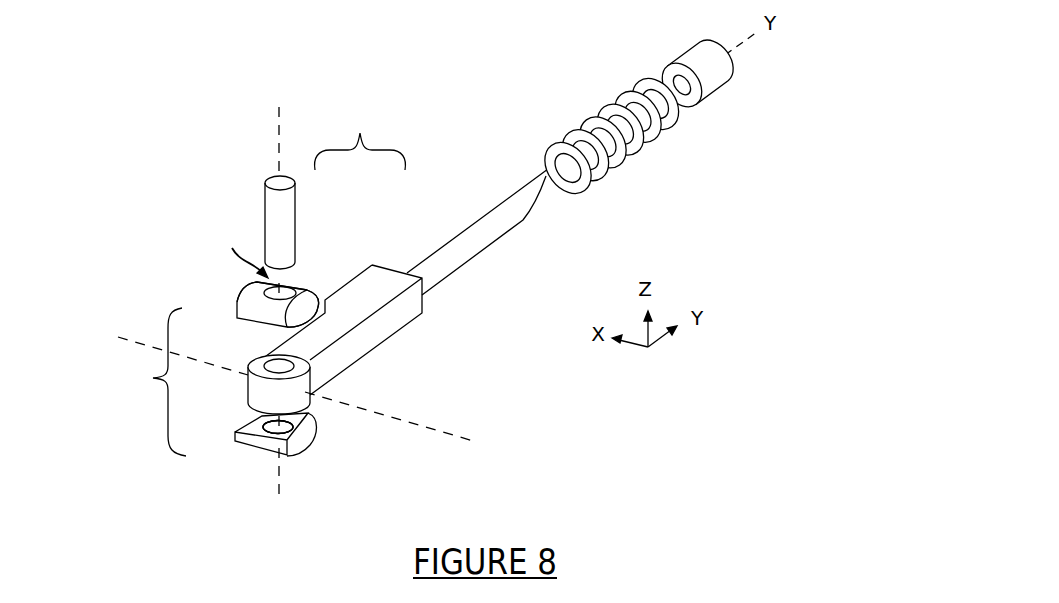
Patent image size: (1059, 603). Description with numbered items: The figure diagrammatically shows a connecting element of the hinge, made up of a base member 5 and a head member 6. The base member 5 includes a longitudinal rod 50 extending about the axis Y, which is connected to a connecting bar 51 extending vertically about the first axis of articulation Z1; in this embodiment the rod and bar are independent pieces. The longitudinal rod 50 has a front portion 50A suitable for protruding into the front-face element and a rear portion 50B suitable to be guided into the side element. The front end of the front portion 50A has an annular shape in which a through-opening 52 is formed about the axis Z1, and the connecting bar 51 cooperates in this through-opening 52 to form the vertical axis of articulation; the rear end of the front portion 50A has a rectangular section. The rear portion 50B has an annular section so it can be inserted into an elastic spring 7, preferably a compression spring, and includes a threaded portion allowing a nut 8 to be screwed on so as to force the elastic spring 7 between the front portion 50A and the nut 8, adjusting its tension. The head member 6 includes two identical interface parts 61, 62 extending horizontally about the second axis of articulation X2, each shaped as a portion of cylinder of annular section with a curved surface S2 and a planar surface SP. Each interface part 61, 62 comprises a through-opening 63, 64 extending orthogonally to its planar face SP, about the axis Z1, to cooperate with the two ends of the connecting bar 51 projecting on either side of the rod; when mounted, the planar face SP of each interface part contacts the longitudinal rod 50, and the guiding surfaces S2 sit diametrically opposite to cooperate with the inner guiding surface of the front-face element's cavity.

The base member 5 is at (360, 134).
The head member 6 is at (156, 382).
The elastic spring 7 is at (645, 143).
The nut 8 is at (677, 57).
The longitudinal rod 50 is at (381, 275).
The front portion 50A is at (378, 331).
The rear portion 50B is at (462, 252).
The connecting bar 51 is at (296, 206).
The through-opening 52 is at (305, 363).
The interface part 61 is at (246, 308).
The interface part 62 is at (234, 432).
The through-opening 63 is at (244, 251).
The through-opening 64 is at (306, 423).
The curved surface S2 is at (245, 298).
The planar surface SP is at (318, 423).
The first axis of articulation Z1 is at (278, 289).
The second axis of articulation X2 is at (316, 399).